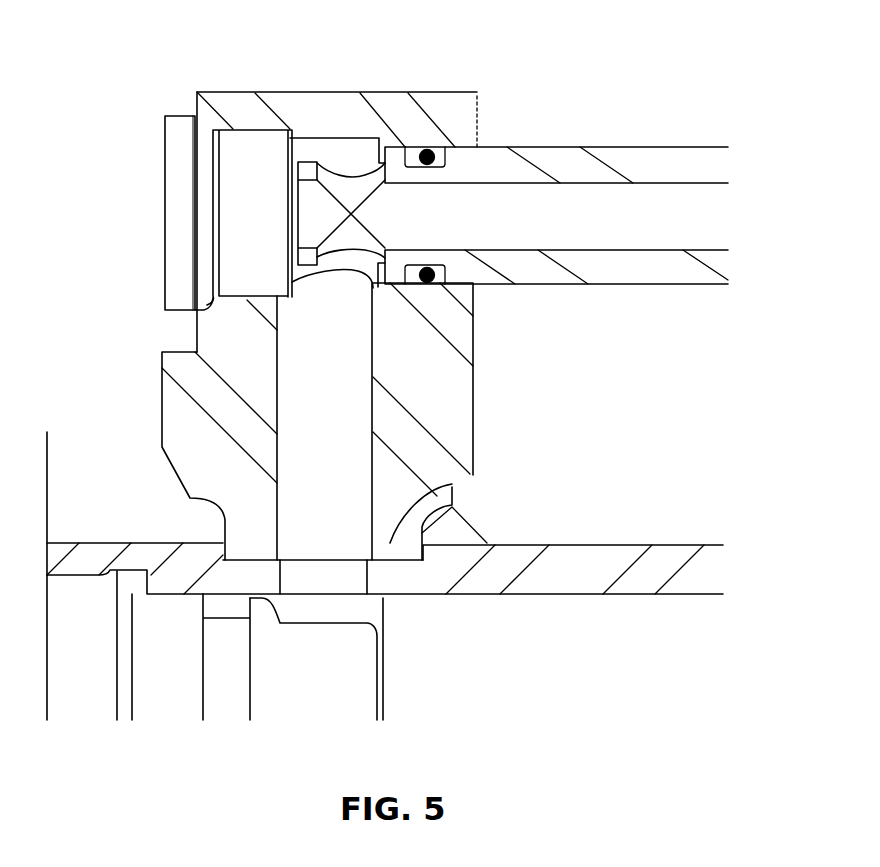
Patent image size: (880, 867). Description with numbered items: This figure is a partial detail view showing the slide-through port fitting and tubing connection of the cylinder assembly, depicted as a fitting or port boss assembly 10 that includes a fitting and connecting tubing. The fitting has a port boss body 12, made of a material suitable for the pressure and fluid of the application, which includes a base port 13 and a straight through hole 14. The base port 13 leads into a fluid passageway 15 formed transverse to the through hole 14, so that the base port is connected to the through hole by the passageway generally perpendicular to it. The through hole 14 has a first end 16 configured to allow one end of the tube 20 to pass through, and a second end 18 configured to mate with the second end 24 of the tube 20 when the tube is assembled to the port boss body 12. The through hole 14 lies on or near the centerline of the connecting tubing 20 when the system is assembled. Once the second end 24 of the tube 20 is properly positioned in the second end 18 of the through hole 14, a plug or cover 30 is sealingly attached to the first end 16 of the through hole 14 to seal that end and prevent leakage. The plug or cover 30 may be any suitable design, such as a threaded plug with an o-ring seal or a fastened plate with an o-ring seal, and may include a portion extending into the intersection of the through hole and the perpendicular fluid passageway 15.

The port boss assembly 10 is at (482, 93).
The port boss body 12 is at (473, 400).
The base port 13 is at (452, 484).
The straight through hole 14 is at (257, 141).
The fluid passageway 15 is at (326, 458).
The first end of the through hole 16 is at (206, 127).
The second end of the through hole 18 is at (470, 158).
The tube 20 is at (600, 284).
The second end of the tube 24 is at (397, 258).
The plug or cover 30 is at (156, 223).